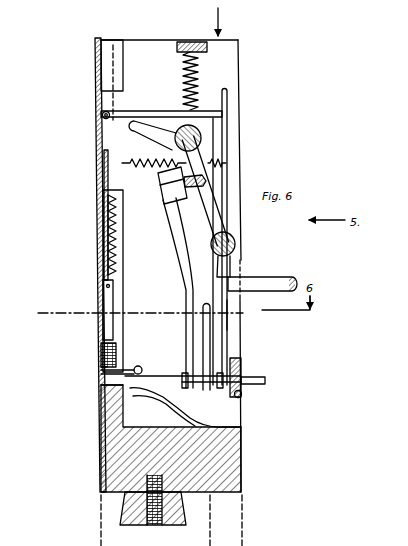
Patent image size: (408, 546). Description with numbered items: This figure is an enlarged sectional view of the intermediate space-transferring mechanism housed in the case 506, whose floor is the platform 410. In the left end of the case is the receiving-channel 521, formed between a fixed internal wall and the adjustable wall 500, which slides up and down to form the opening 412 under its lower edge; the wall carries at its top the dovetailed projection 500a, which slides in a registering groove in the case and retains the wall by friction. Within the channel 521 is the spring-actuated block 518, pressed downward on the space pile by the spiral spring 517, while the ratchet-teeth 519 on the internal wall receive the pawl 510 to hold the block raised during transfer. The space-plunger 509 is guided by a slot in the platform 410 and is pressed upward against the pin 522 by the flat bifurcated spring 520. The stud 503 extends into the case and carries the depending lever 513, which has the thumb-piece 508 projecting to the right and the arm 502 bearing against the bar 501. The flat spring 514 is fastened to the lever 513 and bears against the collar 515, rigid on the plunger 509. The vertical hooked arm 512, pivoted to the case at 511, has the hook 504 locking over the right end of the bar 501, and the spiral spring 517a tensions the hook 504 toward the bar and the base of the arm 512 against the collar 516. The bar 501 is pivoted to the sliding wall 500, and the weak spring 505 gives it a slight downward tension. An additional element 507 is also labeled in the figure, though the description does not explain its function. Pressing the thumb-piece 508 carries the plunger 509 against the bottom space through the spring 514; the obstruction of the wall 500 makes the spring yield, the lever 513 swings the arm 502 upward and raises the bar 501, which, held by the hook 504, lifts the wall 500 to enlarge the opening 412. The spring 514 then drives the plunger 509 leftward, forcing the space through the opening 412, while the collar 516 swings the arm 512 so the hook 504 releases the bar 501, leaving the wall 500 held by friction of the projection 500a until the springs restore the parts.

The platform 410 is at (100, 465).
The opening 412 is at (100, 383).
The adjustable wall 500 is at (100, 356).
The dovetailed projection 500a is at (108, 50).
The bar 501 is at (140, 111).
The arm 502 is at (100, 146).
The stud 503 is at (214, 128).
The hook 504 is at (228, 100).
The weak spring 505 is at (200, 82).
The case 506 is at (215, 180).
The roller 507 is at (202, 143).
The thumb-piece 508 is at (270, 278).
The space-plunger 509 is at (252, 379).
The pawl 510 is at (242, 366).
The pivot 511 is at (236, 246).
The vertical hooked arm 512 is at (229, 312).
The depending lever 513 is at (211, 337).
The flat spring 514 is at (188, 354).
The collar 515 is at (186, 390).
The collar 516 is at (242, 394).
The spiral spring 517 is at (96, 199).
The spiral spring 517a is at (99, 160).
The spring-actuated block 518 is at (100, 300).
The ratchet-teeth 519 is at (95, 247).
The flat bifurcated spring 520 is at (186, 418).
The receiving-channel 521 is at (130, 355).
The pin 522 is at (100, 368).